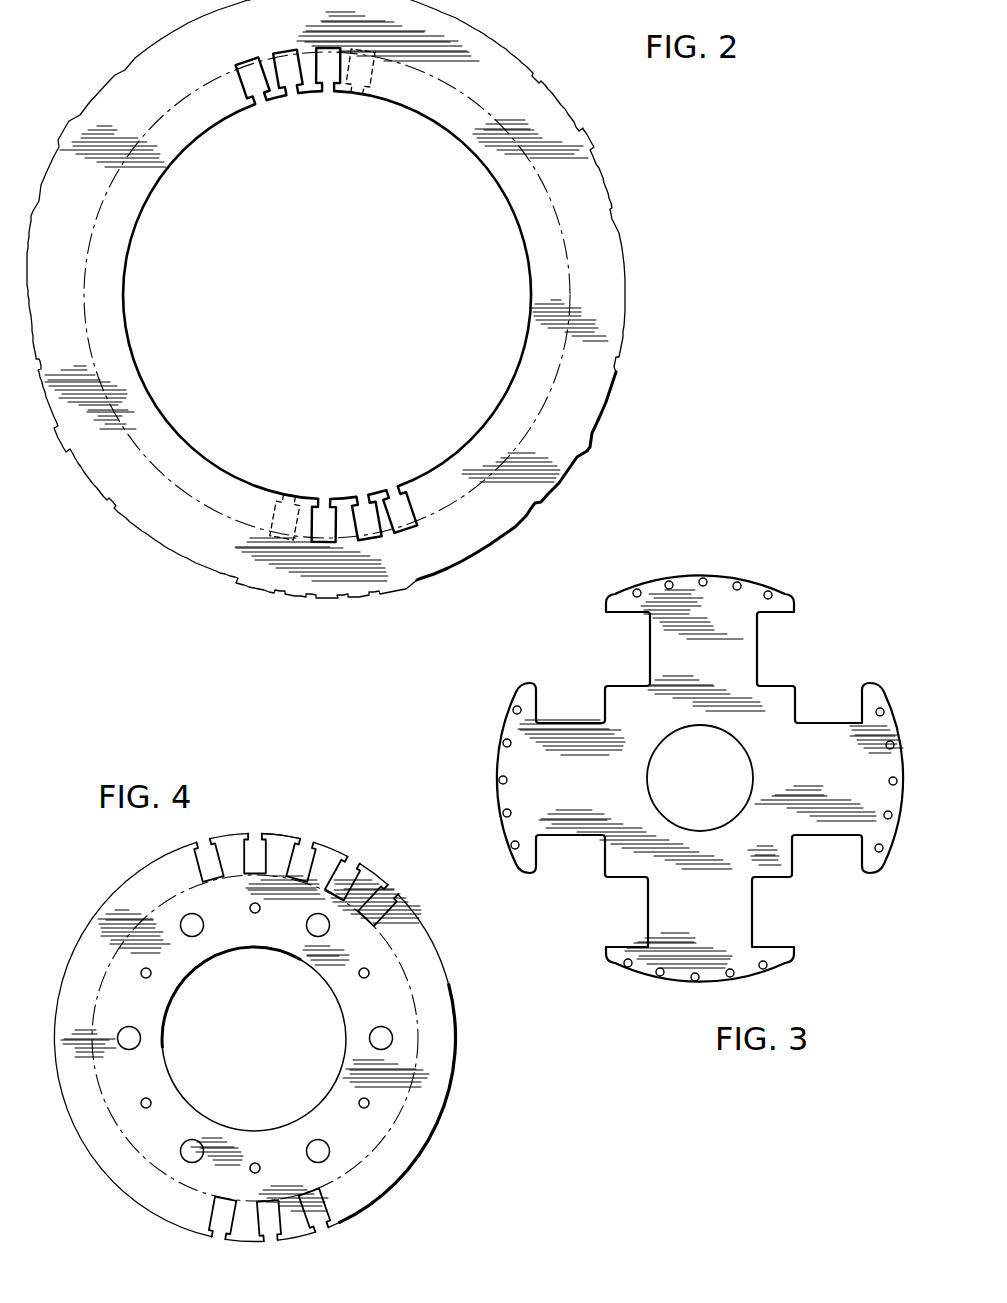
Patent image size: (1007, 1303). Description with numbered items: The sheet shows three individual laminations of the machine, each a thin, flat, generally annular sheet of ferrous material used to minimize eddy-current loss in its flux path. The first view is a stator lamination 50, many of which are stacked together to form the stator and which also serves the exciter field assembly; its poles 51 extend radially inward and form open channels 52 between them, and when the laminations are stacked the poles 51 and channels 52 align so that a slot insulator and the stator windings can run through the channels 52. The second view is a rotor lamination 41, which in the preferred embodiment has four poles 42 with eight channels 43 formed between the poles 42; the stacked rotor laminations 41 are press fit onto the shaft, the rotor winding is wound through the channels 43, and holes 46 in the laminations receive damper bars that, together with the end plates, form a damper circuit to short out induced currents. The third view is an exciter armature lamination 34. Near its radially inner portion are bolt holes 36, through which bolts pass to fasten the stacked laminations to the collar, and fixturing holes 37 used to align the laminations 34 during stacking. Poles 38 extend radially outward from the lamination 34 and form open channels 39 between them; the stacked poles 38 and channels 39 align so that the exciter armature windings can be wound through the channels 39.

In FIG. 2, the stator lamination 50 is at (522, 239).
In FIG. 2, the poles 51 is at (331, 497).
In FIG. 2, the channels 52 is at (400, 489).
In FIG. 3, the rotor lamination 41 is at (528, 686).
In FIG. 3, the poles 42 is at (800, 604).
In FIG. 3, the channels 43 is at (768, 661).
In FIG. 3, the holes 46 is at (704, 579).
In FIG. 4, the exciter armature lamination 34 is at (454, 1057).
In FIG. 4, the bolt holes 36 is at (140, 1039).
In FIG. 4, the fixturing holes 37 is at (150, 1100).
In FIG. 4, the poles 38 is at (288, 838).
In FIG. 4, the channels 39 is at (349, 873).